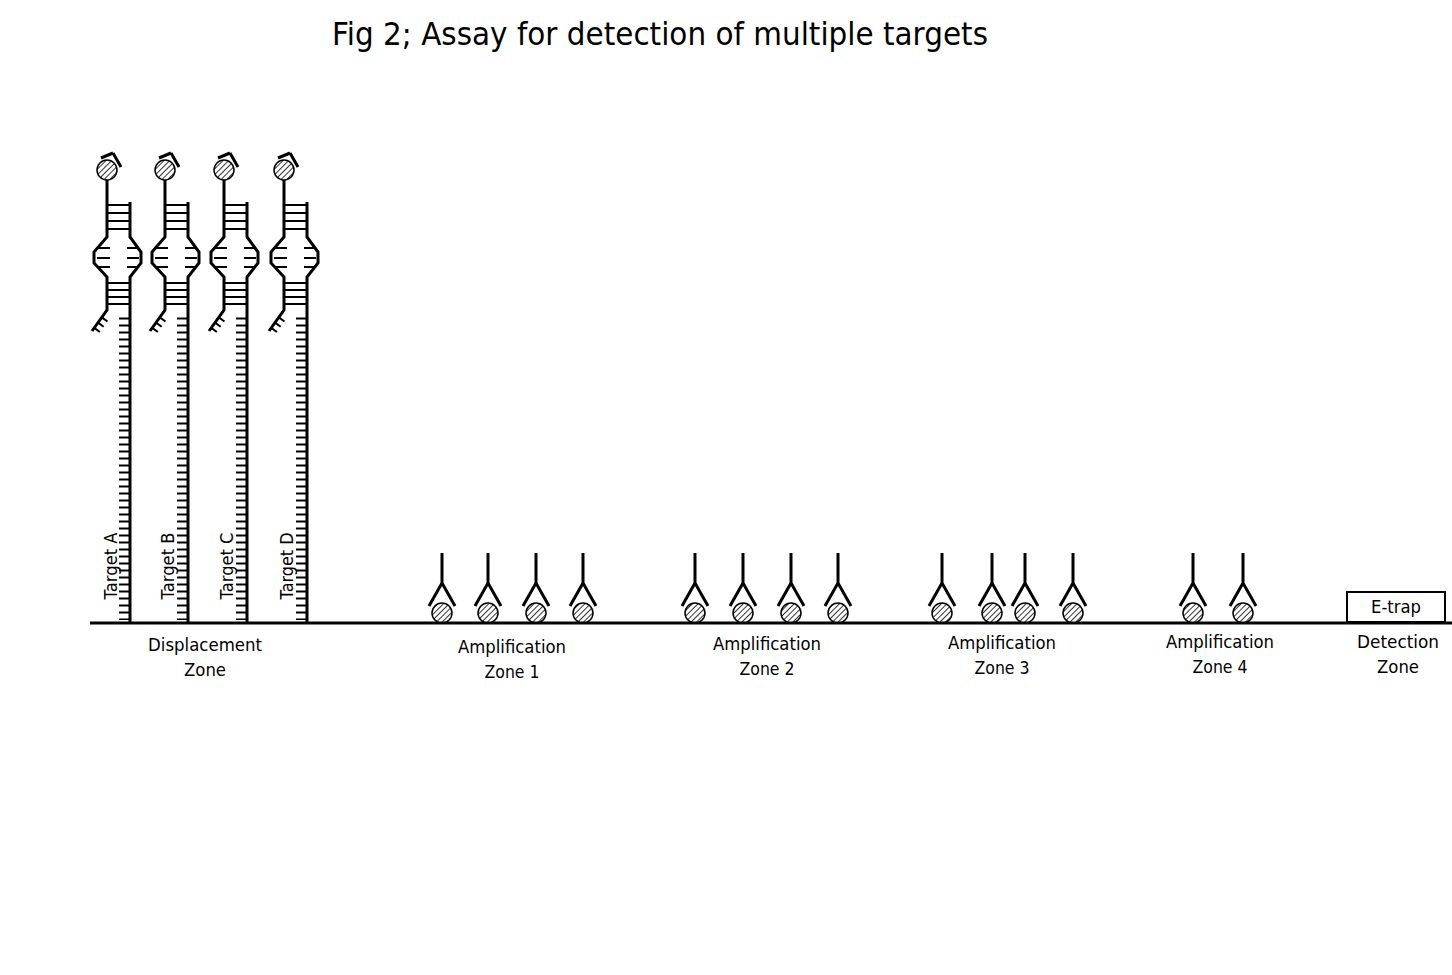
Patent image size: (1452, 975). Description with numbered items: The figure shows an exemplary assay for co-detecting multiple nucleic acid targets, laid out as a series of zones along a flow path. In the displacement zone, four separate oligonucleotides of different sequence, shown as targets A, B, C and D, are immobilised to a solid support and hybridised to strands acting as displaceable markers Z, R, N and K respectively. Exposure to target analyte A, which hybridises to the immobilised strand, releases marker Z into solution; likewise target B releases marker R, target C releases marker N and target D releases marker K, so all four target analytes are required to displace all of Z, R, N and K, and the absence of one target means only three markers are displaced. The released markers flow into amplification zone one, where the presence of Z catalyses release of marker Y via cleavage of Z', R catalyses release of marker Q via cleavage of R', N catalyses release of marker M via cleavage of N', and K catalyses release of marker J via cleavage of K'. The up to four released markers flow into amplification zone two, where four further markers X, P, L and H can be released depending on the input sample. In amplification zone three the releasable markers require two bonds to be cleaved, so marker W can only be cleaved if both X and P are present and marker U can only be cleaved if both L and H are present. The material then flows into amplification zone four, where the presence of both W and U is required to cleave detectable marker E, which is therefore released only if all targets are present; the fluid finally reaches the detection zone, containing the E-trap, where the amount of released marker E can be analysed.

The displaceable marker Z is at (113, 153).
The displaceable marker R is at (189, 354).
The displaceable marker N is at (248, 354).
The displaceable marker K is at (307, 354).
The marker Y is at (442, 520).
The marker Q is at (488, 520).
The marker M is at (536, 520).
The marker J is at (583, 520).
The marker X is at (695, 520).
The marker P is at (743, 520).
The marker L is at (791, 520).
The marker H is at (838, 520).
The marker W is at (990, 520).
The marker U is at (1071, 520).
The detectable marker E is at (1242, 520).